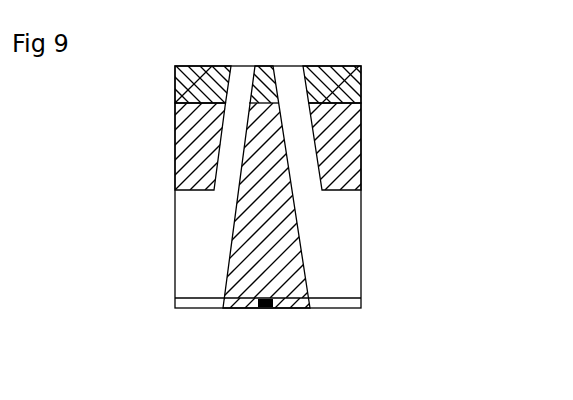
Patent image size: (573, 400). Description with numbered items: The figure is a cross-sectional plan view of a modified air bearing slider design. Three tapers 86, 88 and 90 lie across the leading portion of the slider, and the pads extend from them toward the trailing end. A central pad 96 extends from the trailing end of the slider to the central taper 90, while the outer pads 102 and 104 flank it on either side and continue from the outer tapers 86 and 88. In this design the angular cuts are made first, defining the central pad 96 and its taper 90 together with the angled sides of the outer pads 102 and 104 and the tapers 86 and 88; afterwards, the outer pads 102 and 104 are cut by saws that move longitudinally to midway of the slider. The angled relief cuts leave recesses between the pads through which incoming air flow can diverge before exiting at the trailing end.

The taper 86 is at (200, 51).
The taper 88 is at (330, 51).
The taper 90 is at (263, 154).
The central pad 96 is at (276, 328).
The outer pad 102 is at (176, 148).
The outer pad 104 is at (361, 151).